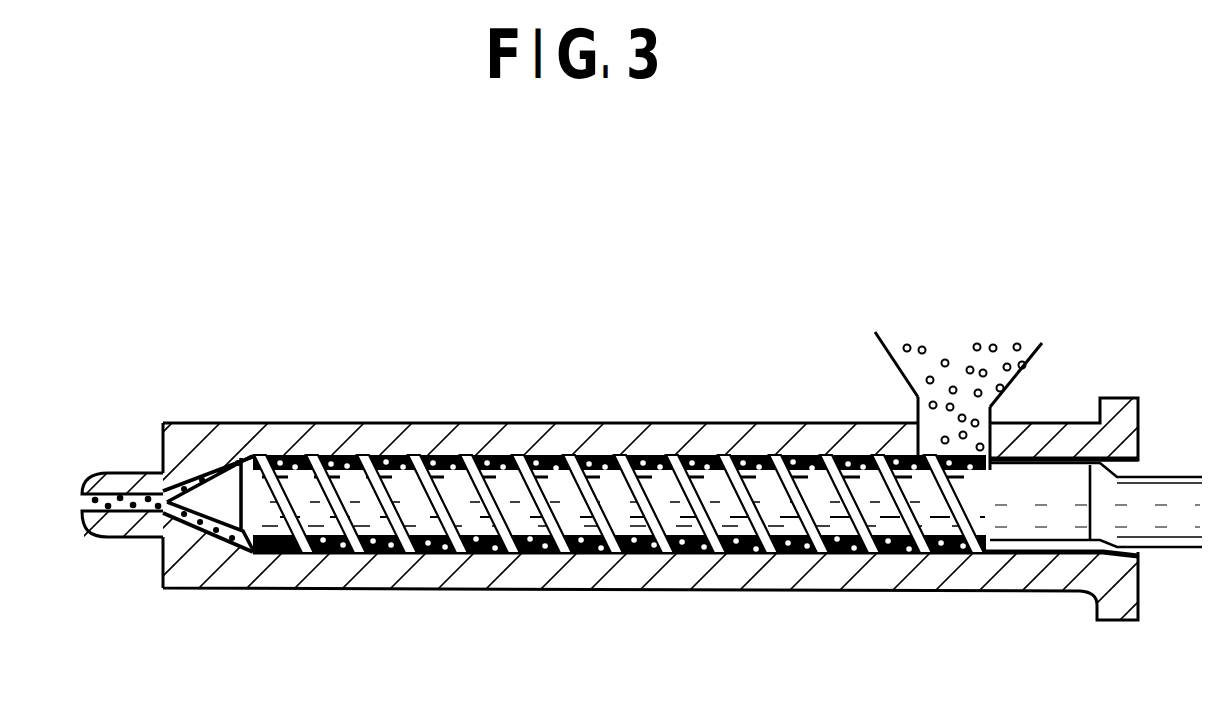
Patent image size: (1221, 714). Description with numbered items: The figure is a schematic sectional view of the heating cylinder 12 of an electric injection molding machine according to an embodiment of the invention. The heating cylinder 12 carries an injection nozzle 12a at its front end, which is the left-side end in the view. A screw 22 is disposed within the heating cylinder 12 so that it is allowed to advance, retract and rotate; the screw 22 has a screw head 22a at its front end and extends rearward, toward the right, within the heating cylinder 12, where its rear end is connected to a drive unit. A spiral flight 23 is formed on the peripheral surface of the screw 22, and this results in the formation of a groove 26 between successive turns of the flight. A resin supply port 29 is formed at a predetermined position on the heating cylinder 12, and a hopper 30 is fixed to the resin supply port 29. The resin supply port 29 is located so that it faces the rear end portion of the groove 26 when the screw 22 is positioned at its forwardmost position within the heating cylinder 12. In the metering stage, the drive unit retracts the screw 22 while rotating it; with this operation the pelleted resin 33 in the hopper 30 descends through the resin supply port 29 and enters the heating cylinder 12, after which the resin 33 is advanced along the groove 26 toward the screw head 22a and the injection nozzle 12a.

The heating cylinder 12 is at (342, 414).
The injection nozzle 12a is at (107, 468).
The screw 22 is at (487, 467).
The screw head 22a is at (223, 495).
The spiral flight 23 is at (758, 470).
The groove 26 is at (583, 465).
The resin supply port 29 is at (963, 427).
The hopper 30 is at (1020, 372).
The pelleted resin 33 is at (955, 352).